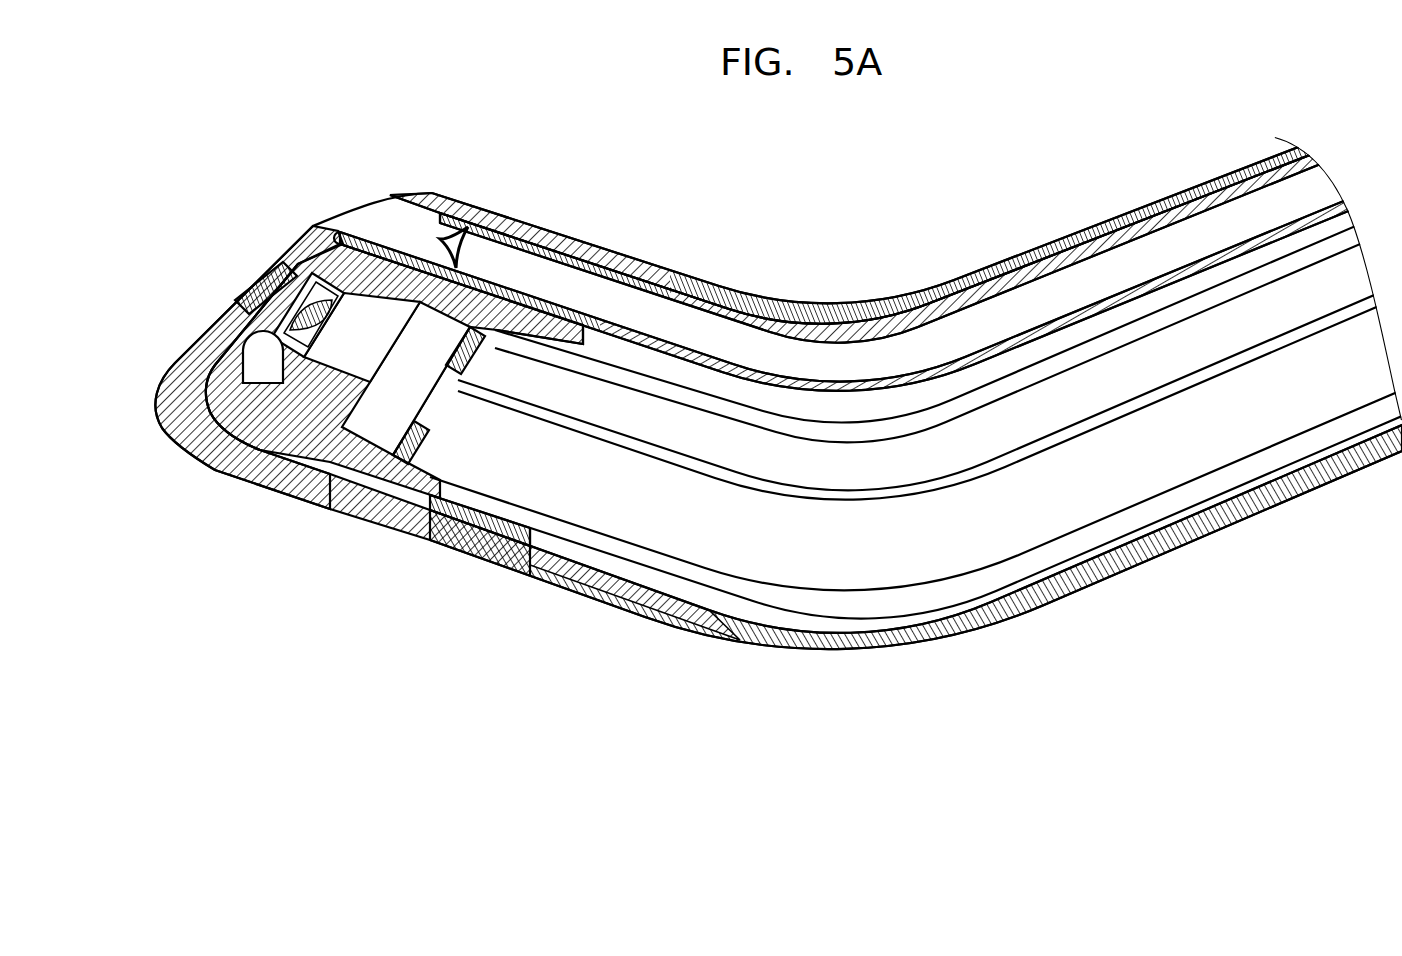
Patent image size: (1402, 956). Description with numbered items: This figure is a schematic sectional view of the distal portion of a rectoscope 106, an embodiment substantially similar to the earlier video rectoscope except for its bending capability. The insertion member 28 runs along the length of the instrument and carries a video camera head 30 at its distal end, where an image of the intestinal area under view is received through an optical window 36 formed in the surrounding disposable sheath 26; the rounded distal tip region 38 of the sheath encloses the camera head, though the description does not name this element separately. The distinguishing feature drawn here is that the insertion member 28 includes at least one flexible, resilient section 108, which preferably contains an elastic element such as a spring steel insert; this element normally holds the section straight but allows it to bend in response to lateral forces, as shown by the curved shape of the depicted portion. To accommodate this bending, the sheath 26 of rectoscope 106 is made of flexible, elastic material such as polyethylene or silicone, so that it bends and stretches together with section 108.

The disposable sheath 26 is at (1092, 230).
The insertion member 28 is at (1122, 512).
The video camera head 30 is at (277, 423).
The optical window 36 is at (270, 270).
The atraumatic tip dome 38 is at (402, 224).
The rectoscope 106 is at (859, 236).
The flexible, resilient section 108 is at (829, 592).